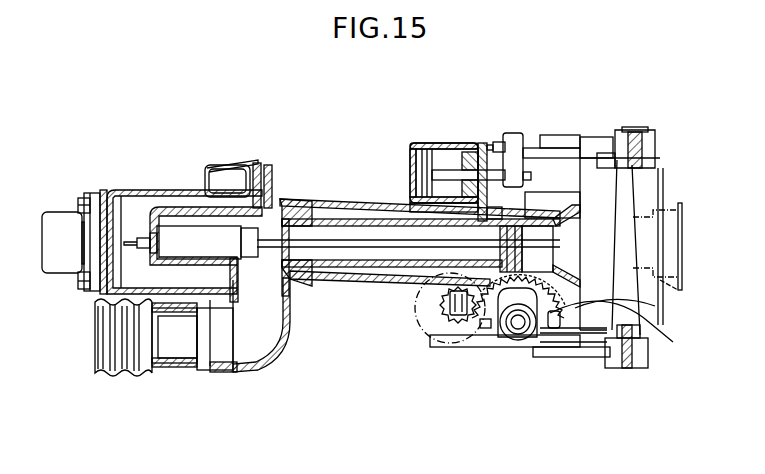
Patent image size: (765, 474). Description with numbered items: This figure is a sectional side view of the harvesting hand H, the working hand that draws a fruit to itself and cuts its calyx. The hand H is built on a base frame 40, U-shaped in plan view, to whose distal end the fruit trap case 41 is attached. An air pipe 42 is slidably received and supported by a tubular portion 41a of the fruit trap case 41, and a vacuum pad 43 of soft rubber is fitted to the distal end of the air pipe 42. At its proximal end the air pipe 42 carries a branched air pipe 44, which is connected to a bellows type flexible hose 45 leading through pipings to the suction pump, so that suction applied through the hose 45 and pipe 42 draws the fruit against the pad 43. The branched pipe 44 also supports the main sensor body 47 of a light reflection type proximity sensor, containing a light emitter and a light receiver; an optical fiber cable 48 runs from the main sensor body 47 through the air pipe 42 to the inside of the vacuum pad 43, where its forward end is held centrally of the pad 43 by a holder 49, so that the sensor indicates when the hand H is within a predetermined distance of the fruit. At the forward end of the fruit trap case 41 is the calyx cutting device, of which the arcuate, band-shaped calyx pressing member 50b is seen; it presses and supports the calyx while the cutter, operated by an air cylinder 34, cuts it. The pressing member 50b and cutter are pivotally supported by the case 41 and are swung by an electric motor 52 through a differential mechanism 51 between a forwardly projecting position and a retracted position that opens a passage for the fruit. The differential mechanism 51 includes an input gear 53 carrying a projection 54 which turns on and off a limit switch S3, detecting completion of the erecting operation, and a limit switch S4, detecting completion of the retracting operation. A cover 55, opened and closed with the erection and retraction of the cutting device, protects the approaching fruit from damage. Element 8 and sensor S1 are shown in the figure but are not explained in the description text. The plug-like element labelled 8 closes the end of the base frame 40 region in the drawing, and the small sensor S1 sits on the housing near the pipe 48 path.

The plug 8 is at (64, 267).
The air cylinder 34 is at (450, 146).
The base frame 40 is at (133, 188).
The fruit trap case 41 is at (486, 143).
The tubular portion 41a is at (410, 196).
The air pipe 42 is at (352, 276).
The vacuum pad 43 is at (575, 272).
The branched air pipe 44 is at (258, 365).
The bellows type flexible hose 45 is at (118, 378).
The main sensor body 47 is at (192, 228).
The optical fiber cable 48 is at (343, 235).
The holder 49 is at (508, 218).
The calyx pressing member 50b is at (638, 188).
The differential mechanism 51 is at (499, 360).
The electric motor 52 is at (420, 312).
The input gear 53 is at (525, 367).
The projection 54 is at (673, 342).
The cover 55 is at (668, 308).
The sensor S1 is at (233, 178).
The limit switch S3 is at (483, 328).
The limit switch S4 is at (548, 330).
The harvesting hand H is at (655, 392).